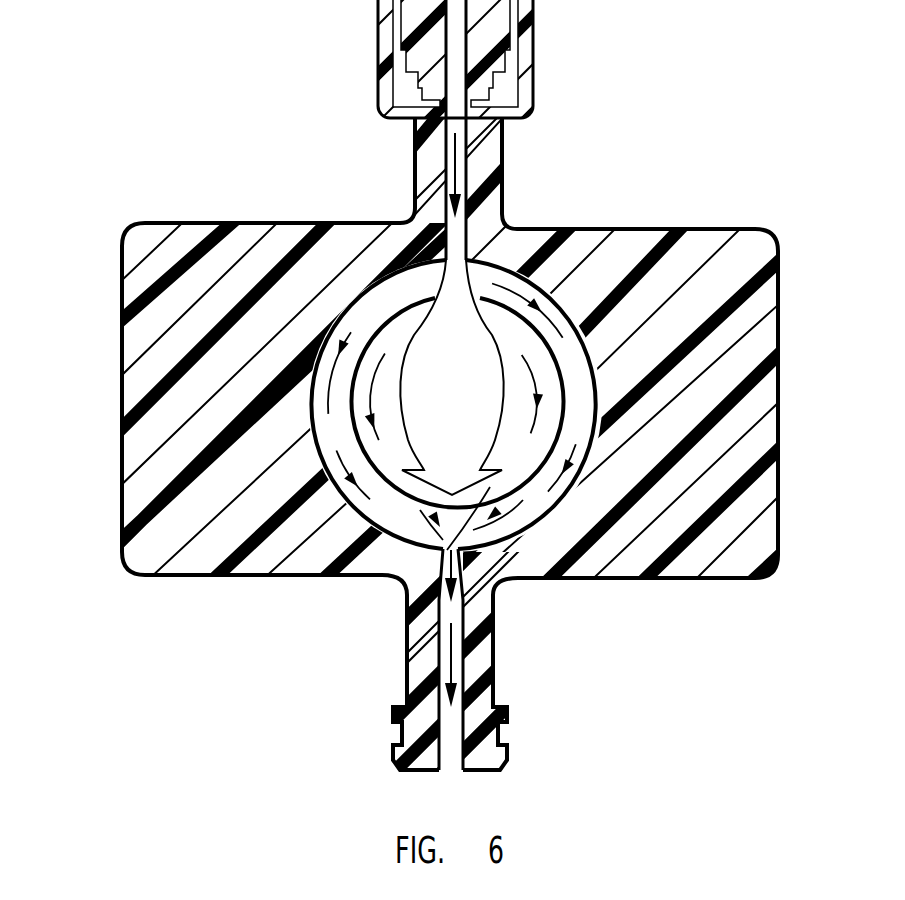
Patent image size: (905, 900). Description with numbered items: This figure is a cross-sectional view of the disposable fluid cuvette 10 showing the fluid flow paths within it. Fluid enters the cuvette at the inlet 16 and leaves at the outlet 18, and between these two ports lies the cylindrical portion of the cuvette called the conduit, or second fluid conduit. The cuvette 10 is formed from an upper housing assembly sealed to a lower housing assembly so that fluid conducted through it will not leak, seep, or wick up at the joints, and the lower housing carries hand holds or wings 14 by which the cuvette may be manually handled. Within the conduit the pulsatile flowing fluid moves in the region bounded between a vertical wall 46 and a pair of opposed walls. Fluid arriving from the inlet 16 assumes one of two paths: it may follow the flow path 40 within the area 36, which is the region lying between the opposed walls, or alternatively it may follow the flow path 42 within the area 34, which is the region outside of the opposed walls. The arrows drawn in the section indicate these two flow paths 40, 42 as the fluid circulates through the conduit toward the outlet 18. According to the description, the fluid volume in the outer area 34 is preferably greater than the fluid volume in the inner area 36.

The disposable fluid cuvette 10 is at (452, 450).
The hand holds or wings 14 is at (120, 293).
The inlet 16 is at (503, 152).
The outlet 18 is at (495, 647).
The area 34 is at (570, 367).
The area 36 is at (402, 458).
The flow path 40 is at (467, 405).
The flow path 42 is at (577, 450).
The vertical wall 46 is at (570, 318).